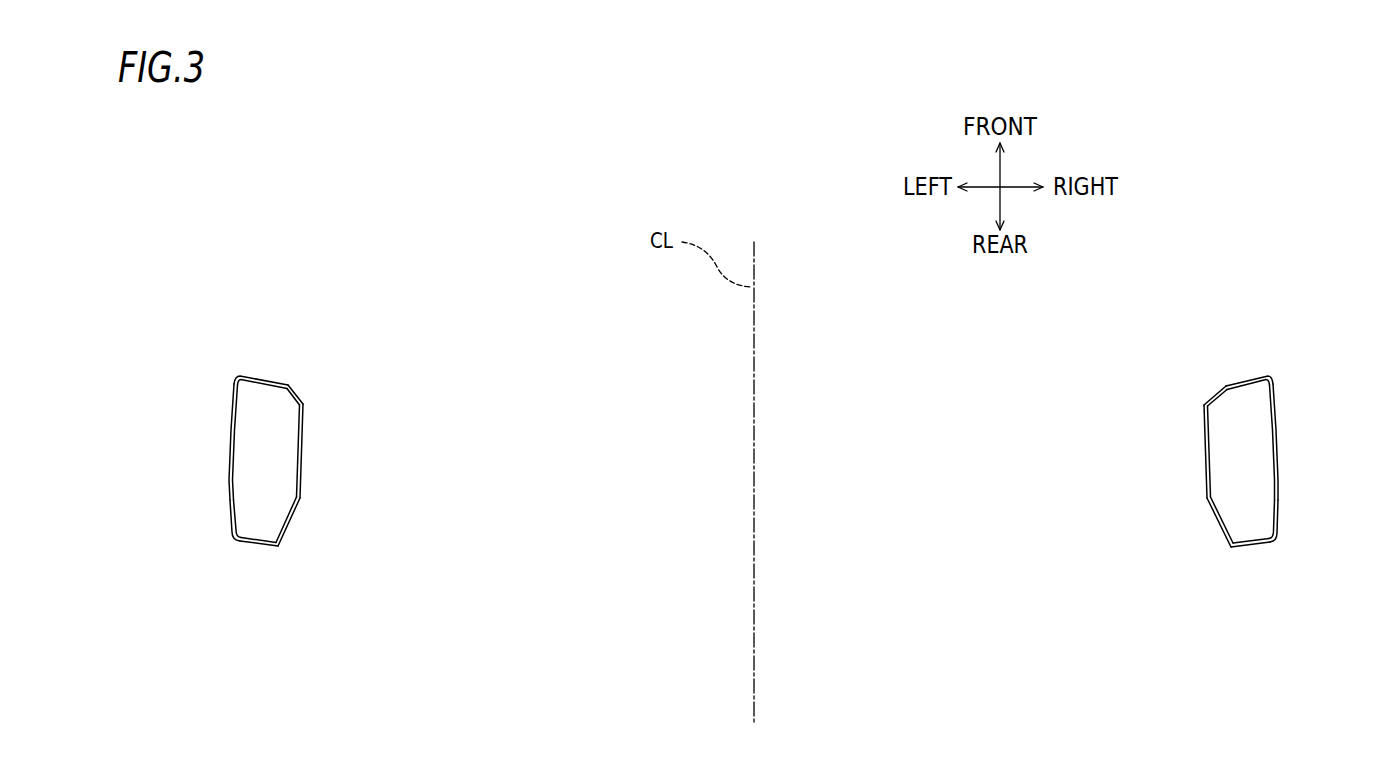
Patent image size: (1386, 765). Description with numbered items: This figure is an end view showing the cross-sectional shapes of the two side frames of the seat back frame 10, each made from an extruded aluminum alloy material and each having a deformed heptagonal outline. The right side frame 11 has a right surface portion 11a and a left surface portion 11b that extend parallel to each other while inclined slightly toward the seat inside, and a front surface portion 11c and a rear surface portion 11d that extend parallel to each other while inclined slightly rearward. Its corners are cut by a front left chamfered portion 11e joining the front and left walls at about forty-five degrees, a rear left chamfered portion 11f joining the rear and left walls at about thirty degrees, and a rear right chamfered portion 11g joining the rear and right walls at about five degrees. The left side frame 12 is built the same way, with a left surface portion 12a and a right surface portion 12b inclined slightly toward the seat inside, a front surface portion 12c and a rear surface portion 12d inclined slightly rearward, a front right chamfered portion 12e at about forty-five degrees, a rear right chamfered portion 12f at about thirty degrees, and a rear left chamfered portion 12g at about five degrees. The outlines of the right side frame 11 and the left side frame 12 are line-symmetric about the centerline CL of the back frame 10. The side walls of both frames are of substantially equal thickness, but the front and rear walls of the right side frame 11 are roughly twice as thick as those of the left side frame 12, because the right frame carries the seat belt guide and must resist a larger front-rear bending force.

The back frame 10 is at (755, 470).
The right side frame 11 is at (1275, 407).
The right surface portion 11a is at (1277, 462).
The left surface portion 11b is at (1205, 447).
The front surface portion 11c is at (1243, 377).
The rear surface portion 11d is at (1255, 552).
The front left chamfered portion 11e is at (1208, 398).
The rear left chamfered portion 11f is at (1218, 525).
The rear right chamfered portion 11g is at (1278, 513).
The left side frame 12 is at (232, 407).
The left surface portion 12a is at (230, 463).
The right surface portion 12b is at (304, 432).
The front surface portion 12c is at (270, 377).
The rear surface portion 12d is at (252, 548).
The front right chamfered portion 12e is at (293, 388).
The rear right chamfered portion 12f is at (287, 538).
The rear left chamfered portion 12g is at (230, 518).